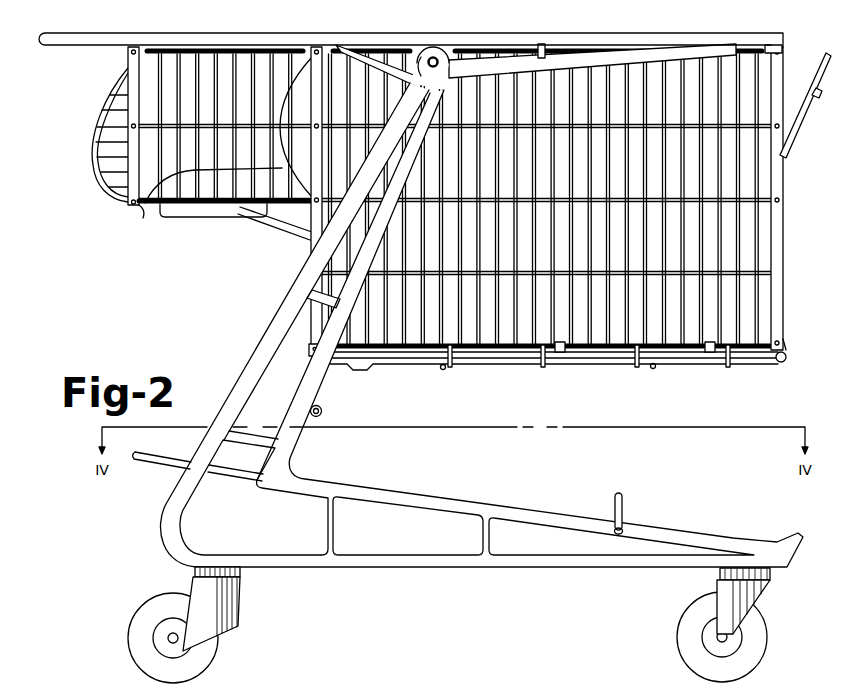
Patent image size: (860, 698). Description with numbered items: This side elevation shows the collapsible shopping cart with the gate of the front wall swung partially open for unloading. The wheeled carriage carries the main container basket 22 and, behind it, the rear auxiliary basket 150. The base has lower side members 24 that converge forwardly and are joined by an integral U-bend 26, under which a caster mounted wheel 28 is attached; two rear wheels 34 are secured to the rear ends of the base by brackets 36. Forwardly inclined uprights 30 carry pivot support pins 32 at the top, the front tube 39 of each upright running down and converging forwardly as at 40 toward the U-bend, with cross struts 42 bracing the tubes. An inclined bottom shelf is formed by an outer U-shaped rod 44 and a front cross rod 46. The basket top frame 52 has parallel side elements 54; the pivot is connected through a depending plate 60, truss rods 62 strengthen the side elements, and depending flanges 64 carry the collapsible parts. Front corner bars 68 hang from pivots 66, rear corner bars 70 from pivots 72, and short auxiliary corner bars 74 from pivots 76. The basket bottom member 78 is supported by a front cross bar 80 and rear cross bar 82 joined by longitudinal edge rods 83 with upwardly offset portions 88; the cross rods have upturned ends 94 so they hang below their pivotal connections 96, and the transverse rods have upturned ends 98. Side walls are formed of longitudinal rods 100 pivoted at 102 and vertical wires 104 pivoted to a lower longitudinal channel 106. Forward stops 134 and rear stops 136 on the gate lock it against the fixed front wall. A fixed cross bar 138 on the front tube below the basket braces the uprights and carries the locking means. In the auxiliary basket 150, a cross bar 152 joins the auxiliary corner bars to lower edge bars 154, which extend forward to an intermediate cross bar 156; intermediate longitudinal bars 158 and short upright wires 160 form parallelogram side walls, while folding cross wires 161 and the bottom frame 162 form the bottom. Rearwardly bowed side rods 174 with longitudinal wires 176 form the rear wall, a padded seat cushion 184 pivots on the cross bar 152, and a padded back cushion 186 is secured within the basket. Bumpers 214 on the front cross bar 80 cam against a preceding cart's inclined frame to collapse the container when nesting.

The container basket 22 is at (715, 374).
The lower side members 24 is at (457, 587).
The U-bends 26 is at (800, 531).
The caster mounted wheel 28 is at (687, 628).
The uprights 30 is at (471, 349).
The pivot support pins 32 is at (441, 46).
The rear wheels 34 is at (137, 631).
The brackets 36 is at (231, 603).
The tubular member 39 is at (308, 380).
The converging portions 40 is at (523, 562).
The cross struts 42 is at (331, 520).
The U-shaped rod 44 is at (173, 464).
The cross rod 46 is at (624, 519).
The basket top frame 52 is at (567, 690).
The side elements 54 is at (645, 37).
The depending plate 60 is at (450, 44).
The truss rods 62 is at (547, 58).
The depending longitudinal flanges 64 is at (748, 52).
The pivots 66 is at (780, 48).
The front corner bars 68 is at (778, 182).
The rear corner bars 70 is at (310, 243).
The pivots 72 is at (320, 47).
The auxiliary corner bars 74 is at (128, 192).
The pivots 76 is at (133, 46).
The basket bottom member 78 is at (552, 378).
The front cross bar 80 is at (780, 362).
The rear cross bar 82 is at (313, 355).
The longitudinal edge rods 83 is at (673, 360).
The upwardly offset portions 88 is at (363, 368).
The upturned ends 94 is at (773, 363).
The pivotal connections 96 is at (313, 348).
The upturned ends 98 is at (540, 353).
The longitudinal rods 100 is at (757, 272).
The pivots 102 is at (780, 273).
The vertical rods 104 is at (742, 233).
The lower longitudinal channel 106 is at (620, 347).
The forward stops 134 is at (813, 102).
The rear stops 136 is at (817, 62).
The fixed cross bar 138 is at (322, 411).
The auxiliary basket 150 is at (78, 113).
The cross bar 152 is at (143, 210).
The lower longitudinal edge bars 154 is at (240, 200).
The intermediate cross bar 156 is at (308, 214).
The intermediate longitudinal bars 158 is at (207, 127).
The upright wires 160 is at (183, 66).
The cross wires 161 is at (307, 697).
The bottom frame 162 is at (265, 697).
The upright side rods 174 is at (97, 181).
The longitudinal rods 176 is at (108, 161).
The padded seat cushion 184 is at (188, 190).
The padded back cushion 186 is at (307, 80).
The bumpers 214 is at (787, 356).